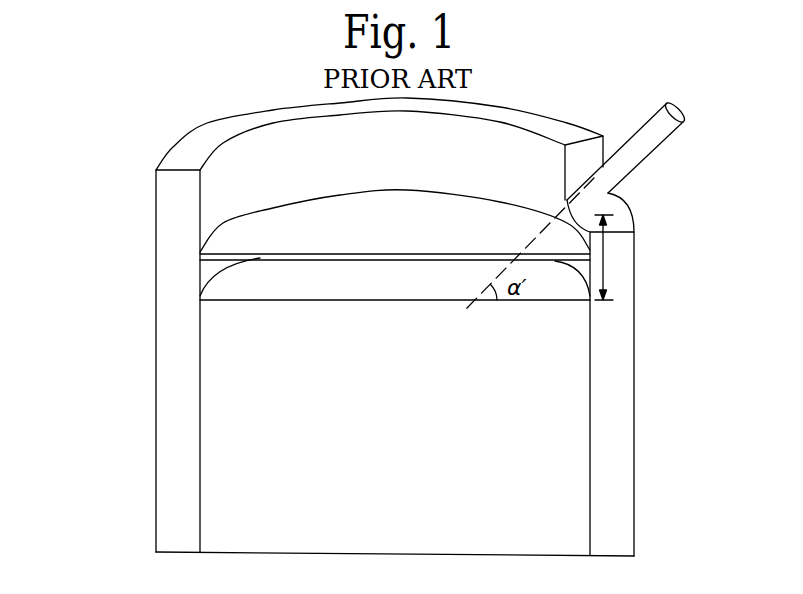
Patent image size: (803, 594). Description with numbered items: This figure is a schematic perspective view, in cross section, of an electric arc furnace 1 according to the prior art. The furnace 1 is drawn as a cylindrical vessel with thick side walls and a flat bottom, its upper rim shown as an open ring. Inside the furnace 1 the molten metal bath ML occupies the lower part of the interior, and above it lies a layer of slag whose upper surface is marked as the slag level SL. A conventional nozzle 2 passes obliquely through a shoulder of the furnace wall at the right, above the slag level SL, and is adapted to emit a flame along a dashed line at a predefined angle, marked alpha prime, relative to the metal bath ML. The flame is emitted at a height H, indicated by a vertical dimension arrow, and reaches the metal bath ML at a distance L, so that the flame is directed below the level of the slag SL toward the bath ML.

The electric arc furnace 1 is at (258, 167).
The conventional nozzle 2 is at (647, 142).
The slag level SL is at (231, 247).
The metal bath ML is at (213, 304).
The distance from the metal bath L is at (530, 243).
The height H is at (610, 257).